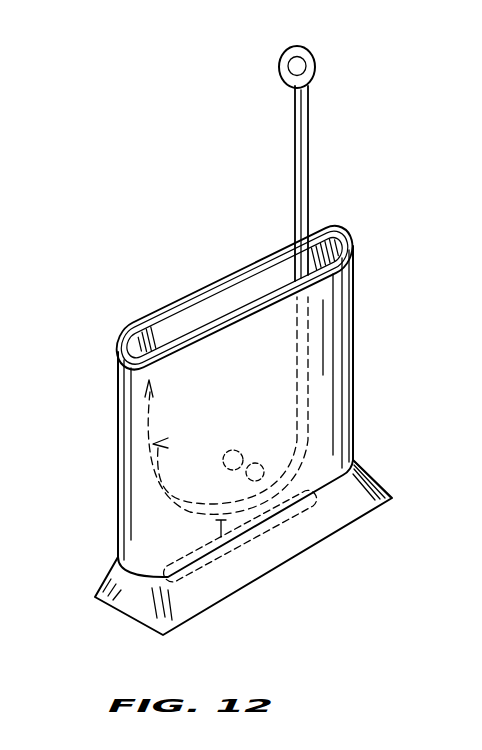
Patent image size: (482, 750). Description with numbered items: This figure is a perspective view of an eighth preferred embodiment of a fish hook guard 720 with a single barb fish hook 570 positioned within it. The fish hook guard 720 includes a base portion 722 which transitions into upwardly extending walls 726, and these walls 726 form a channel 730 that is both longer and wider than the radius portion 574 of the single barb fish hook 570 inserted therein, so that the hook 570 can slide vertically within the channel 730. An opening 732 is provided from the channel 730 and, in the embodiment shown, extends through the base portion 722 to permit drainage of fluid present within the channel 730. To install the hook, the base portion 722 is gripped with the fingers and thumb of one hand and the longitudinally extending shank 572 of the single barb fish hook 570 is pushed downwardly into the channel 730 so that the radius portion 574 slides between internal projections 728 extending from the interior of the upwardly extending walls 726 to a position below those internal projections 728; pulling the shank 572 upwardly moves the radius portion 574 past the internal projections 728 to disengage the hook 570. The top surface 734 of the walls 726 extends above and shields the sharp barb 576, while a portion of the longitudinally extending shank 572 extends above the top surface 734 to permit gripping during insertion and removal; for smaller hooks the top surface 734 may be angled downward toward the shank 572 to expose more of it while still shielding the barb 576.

The fish hook guard 720 is at (388, 441).
The base portion 722 is at (367, 507).
The upwardly extending walls 726 is at (338, 353).
The internal projections 728 is at (262, 460).
The channel 730 is at (240, 298).
The opening 732 is at (320, 535).
The top surface 734 is at (338, 236).
The single barb fish hook 570 is at (315, 136).
The longitudinally extending shank 572 is at (308, 175).
The radius portion 574 is at (223, 522).
The sharp barb 576 is at (148, 424).